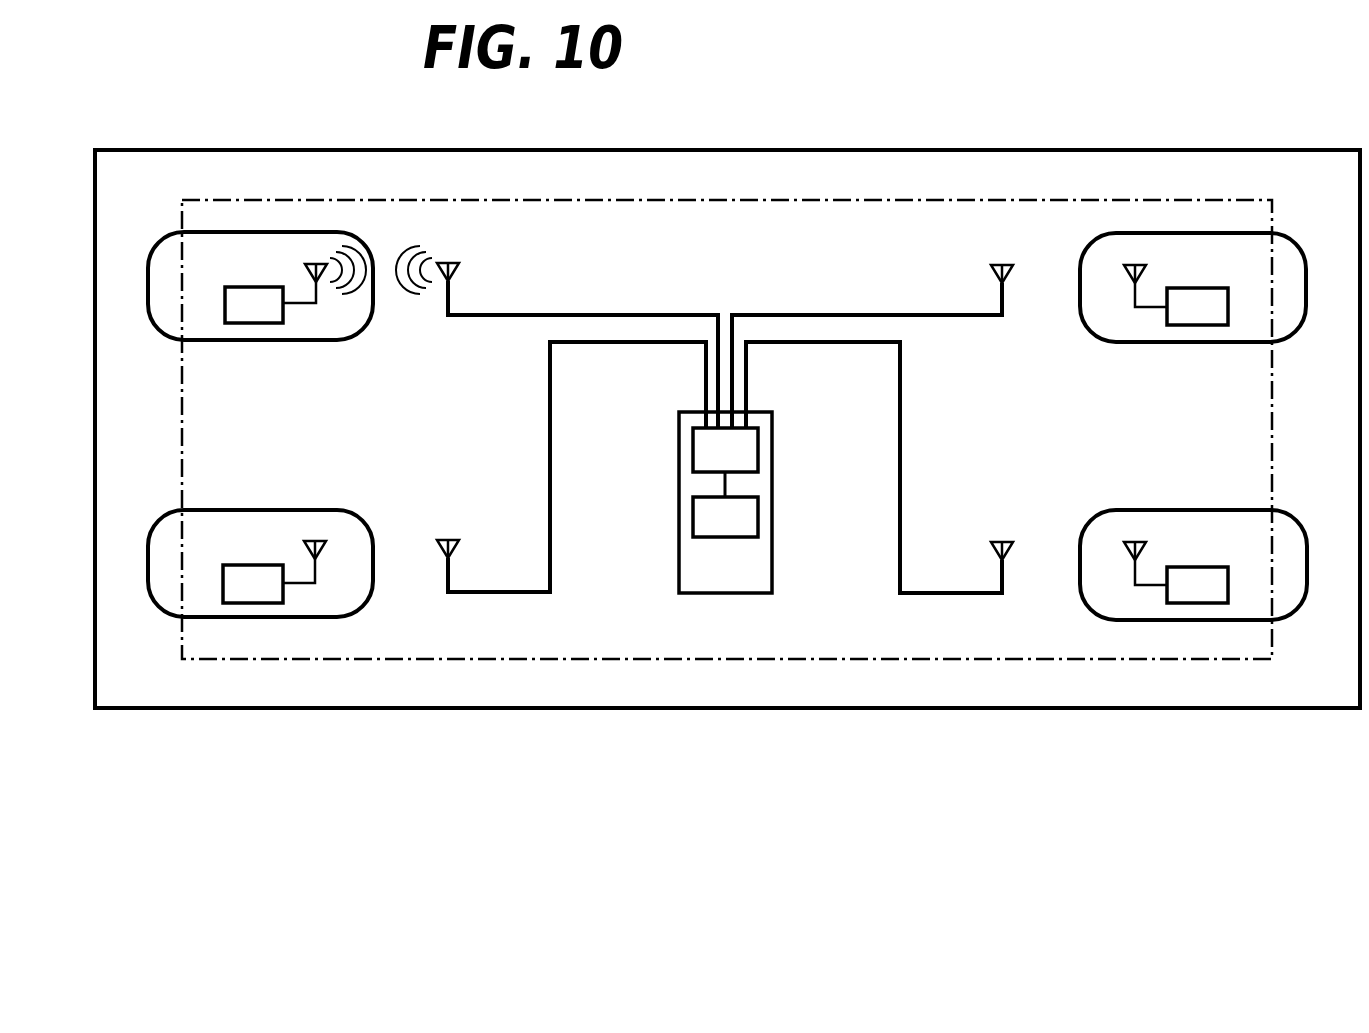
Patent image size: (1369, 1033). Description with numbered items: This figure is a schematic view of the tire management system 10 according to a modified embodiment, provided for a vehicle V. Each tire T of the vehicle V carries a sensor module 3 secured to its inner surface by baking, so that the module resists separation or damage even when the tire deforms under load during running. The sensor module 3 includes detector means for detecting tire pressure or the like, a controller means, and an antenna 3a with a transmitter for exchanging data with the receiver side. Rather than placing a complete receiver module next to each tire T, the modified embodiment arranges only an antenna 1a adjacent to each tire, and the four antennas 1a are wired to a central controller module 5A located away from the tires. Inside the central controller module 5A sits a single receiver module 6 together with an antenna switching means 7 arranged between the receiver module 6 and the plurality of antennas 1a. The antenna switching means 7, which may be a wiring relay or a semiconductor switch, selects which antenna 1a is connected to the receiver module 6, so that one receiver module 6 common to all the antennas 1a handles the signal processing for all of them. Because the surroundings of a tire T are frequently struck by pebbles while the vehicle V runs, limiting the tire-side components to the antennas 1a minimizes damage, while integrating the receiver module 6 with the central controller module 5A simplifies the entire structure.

The tire management system 10 is at (727, 200).
The vehicle V is at (1020, 150).
The tire T is at (230, 232).
The sensor module 3 is at (255, 323).
The antenna 3a is at (1140, 265).
The antenna 1a is at (455, 262).
The central controller module 5A is at (772, 495).
The antenna switching means 7 is at (693, 450).
The receiver module 6 is at (693, 522).